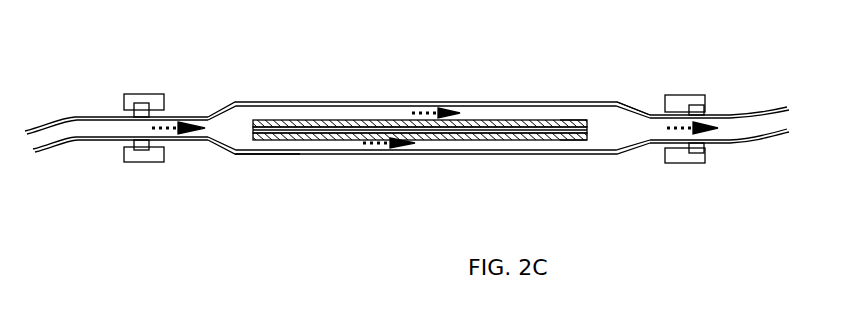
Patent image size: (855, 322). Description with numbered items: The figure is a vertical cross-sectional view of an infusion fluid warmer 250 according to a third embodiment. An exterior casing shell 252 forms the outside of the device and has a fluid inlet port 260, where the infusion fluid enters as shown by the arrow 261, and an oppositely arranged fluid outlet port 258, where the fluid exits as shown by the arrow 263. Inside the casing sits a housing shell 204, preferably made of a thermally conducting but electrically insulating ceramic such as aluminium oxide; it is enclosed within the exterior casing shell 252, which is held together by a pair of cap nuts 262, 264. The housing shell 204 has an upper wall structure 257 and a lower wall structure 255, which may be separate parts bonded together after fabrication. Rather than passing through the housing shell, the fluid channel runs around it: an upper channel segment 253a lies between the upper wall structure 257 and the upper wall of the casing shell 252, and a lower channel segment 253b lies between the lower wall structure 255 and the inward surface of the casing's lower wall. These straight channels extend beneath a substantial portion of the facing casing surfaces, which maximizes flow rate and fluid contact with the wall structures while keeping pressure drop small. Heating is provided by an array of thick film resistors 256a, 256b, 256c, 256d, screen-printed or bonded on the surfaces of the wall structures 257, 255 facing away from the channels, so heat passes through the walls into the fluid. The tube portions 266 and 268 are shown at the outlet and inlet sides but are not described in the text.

The infusion fluid warmer 250 is at (172, 247).
The exterior casing shell 252 is at (278, 96).
The housing shell 204 is at (453, 125).
The upper channel segment 253a is at (458, 102).
The lower channel segment 253b is at (425, 145).
The lower wall structure 255 is at (563, 136).
The thick film resistor 256a is at (375, 120).
The thick film resistor 256b is at (488, 120).
The thick film resistor 256c is at (470, 140).
The thick film resistor 256d is at (302, 156).
The upper wall structure 257 is at (572, 118).
The fluid outlet port 258 is at (650, 158).
The fluid inlet port 260 is at (200, 138).
The arrow 261 is at (186, 125).
The cap nut 262 is at (126, 94).
The arrow 263 is at (665, 102).
The cap nut 264 is at (705, 95).
The outlet tube 266 is at (733, 145).
The inlet tube 268 is at (92, 143).